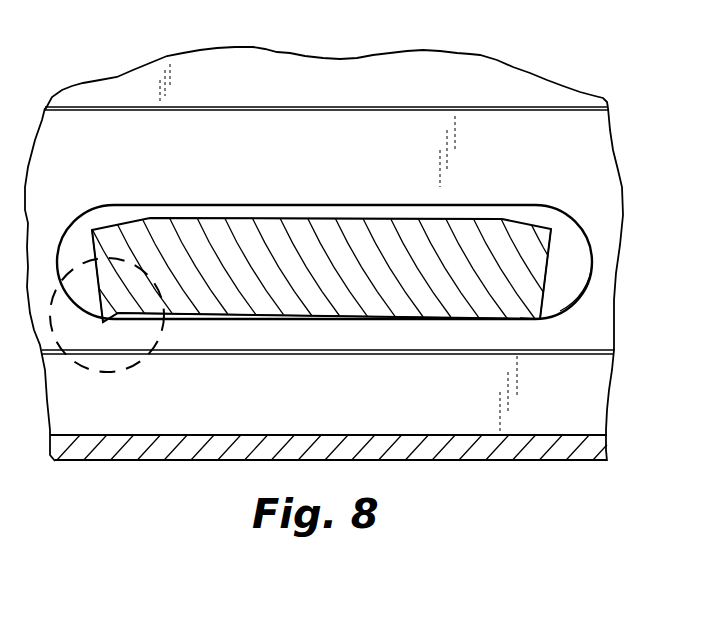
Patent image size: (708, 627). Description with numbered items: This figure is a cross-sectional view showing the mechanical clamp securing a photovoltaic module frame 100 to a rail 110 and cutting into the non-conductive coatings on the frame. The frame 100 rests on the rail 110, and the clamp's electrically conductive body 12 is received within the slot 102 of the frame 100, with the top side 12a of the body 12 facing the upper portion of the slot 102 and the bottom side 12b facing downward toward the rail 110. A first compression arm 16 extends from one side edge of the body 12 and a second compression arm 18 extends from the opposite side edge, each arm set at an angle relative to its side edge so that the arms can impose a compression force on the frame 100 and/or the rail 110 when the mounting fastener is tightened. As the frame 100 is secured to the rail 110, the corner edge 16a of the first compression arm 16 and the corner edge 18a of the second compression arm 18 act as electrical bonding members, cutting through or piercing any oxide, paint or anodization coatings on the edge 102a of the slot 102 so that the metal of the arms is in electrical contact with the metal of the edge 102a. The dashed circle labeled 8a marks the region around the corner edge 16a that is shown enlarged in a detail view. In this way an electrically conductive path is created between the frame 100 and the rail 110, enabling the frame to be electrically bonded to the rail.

The frame 100 is at (124, 100).
The slot 102 is at (576, 251).
The edge of the slot 102a is at (573, 302).
The electrically conductive body 12 is at (193, 212).
The top side 12a is at (277, 218).
The bottom side 12b is at (283, 314).
The first compression arm 16 is at (82, 240).
The corner edge of the first compression arm 16a is at (102, 323).
The second compression arm 18 is at (560, 240).
The corner edge of the second compression arm 18a is at (546, 320).
The detail region 8a is at (148, 368).
The rail 110 is at (106, 468).